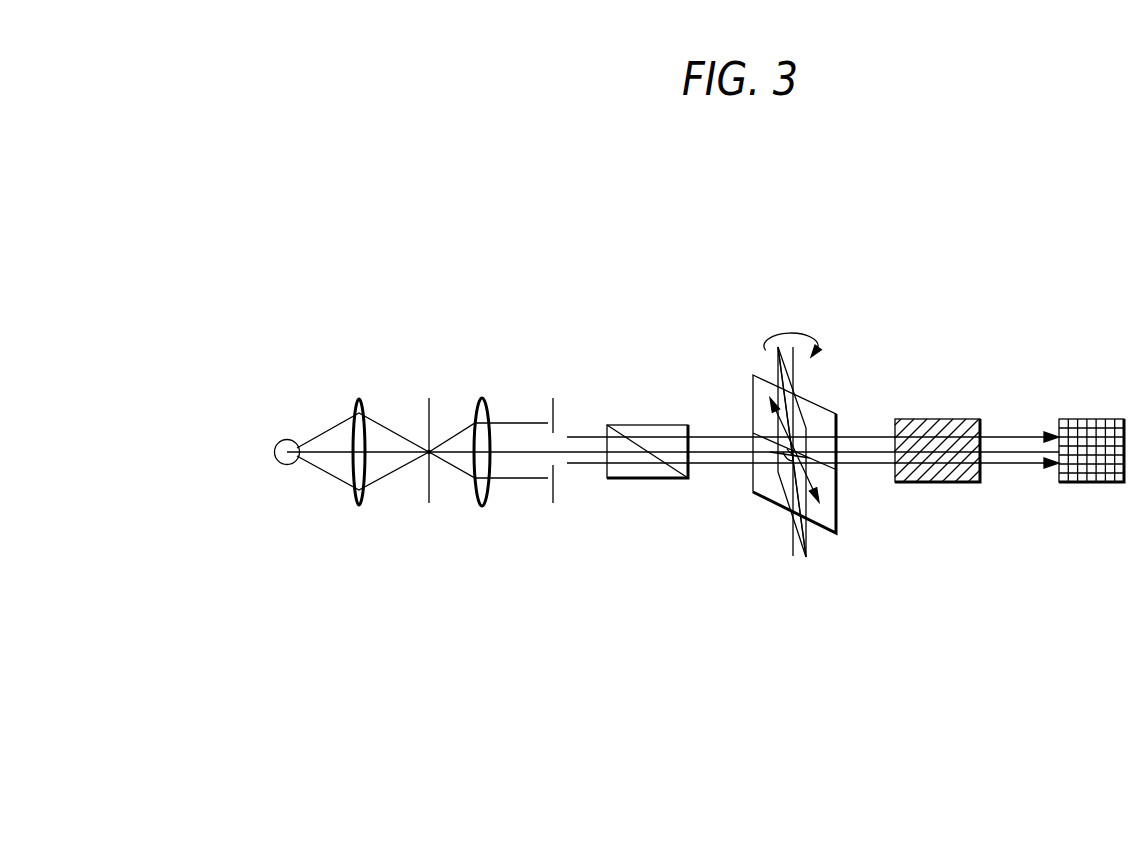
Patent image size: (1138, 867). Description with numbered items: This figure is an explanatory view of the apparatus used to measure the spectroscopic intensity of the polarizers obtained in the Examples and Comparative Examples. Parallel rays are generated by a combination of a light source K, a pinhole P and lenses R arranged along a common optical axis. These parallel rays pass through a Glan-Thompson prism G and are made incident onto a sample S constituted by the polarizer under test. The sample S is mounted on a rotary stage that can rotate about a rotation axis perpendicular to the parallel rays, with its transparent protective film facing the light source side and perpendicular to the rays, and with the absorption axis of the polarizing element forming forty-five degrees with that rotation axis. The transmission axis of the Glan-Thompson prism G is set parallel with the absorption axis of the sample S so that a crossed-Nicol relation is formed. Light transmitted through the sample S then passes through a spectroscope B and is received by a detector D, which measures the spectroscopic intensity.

The light source K is at (277, 461).
The lenses R is at (360, 506).
The pinhole P is at (422, 462).
The Glan-Thompson prism G is at (650, 481).
The sample S is at (837, 515).
The spectroscope B is at (933, 483).
The detector D is at (1090, 483).